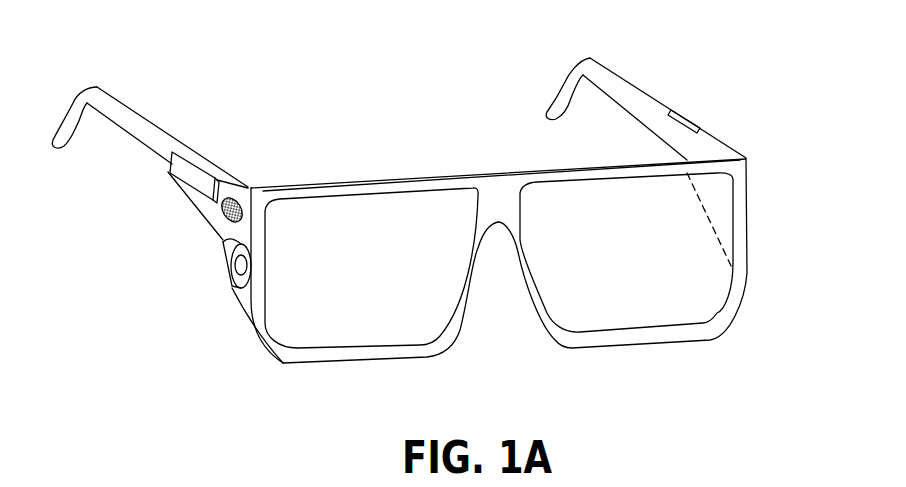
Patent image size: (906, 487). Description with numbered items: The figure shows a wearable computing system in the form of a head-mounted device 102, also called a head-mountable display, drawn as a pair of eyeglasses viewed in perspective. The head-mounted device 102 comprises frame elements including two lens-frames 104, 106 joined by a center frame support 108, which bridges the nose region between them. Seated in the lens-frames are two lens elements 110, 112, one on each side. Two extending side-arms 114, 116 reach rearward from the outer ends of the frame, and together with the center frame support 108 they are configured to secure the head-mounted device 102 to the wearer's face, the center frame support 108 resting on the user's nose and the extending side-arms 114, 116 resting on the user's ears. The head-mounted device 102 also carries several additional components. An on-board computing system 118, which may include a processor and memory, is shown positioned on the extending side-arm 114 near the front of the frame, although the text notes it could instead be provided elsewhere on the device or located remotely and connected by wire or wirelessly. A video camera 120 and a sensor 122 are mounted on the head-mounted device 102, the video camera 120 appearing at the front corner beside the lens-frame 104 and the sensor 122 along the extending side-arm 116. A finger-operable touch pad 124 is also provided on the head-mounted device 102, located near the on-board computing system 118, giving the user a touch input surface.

The head-mounted device 102 is at (400, 221).
The lens-frame 104 is at (342, 187).
The lens-frame 106 is at (562, 172).
The center frame support 108 is at (500, 193).
The lens element 110 is at (317, 328).
The lens element 112 is at (645, 313).
The extending side-arm 114 is at (188, 156).
The extending side-arm 116 is at (650, 100).
The on-board computing system 118 is at (187, 173).
The video camera 120 is at (222, 253).
The sensor 122 is at (690, 118).
The finger-operable touch pad 124 is at (220, 213).